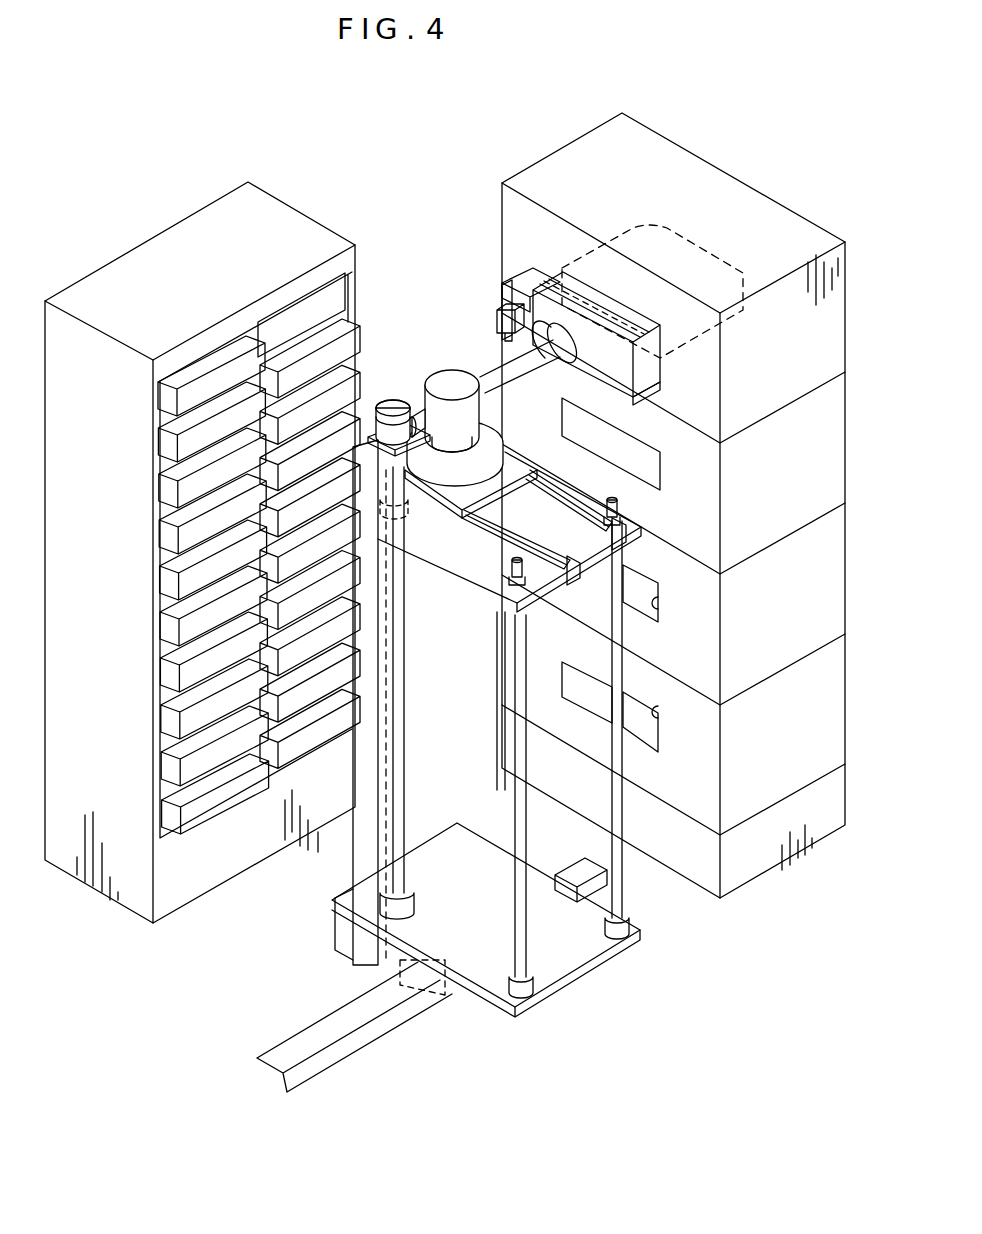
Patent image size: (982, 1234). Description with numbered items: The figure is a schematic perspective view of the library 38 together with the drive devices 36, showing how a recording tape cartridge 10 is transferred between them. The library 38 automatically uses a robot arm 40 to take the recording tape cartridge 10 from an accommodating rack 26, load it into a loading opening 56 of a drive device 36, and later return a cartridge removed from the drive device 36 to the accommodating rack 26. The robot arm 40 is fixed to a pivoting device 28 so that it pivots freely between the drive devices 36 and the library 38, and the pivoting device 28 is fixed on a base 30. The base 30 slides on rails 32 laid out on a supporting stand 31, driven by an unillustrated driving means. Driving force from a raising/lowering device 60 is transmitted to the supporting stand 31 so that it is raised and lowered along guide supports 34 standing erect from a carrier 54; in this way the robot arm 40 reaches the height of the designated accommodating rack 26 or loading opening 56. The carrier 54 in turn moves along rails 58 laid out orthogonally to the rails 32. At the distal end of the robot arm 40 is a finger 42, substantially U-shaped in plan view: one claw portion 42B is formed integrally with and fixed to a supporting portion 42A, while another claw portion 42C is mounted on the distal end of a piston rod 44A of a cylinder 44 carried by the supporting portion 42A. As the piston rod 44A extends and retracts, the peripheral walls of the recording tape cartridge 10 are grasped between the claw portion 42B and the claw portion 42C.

The recording tape cartridge 10 is at (697, 250).
The accommodating rack 26 is at (222, 395).
The pivoting device 28 is at (458, 427).
The base 30 is at (490, 487).
The supporting stand 31 is at (490, 575).
The rails 32 is at (522, 580).
The guide supports 34 is at (607, 912).
The drive device 36 is at (603, 138).
The library 38 is at (341, 190).
The robot arm 40 is at (431, 343).
The finger 42 is at (617, 384).
The supporting portion 42A is at (612, 402).
The claw portion 42B is at (660, 378).
The claw portion 42C is at (503, 283).
The cylinder 44 is at (530, 278).
The piston rod 44A is at (498, 318).
The carrier 54 is at (487, 972).
The loading opening 56 is at (658, 712).
The rails 58 is at (353, 1043).
The raising/lowering device 60 is at (396, 394).